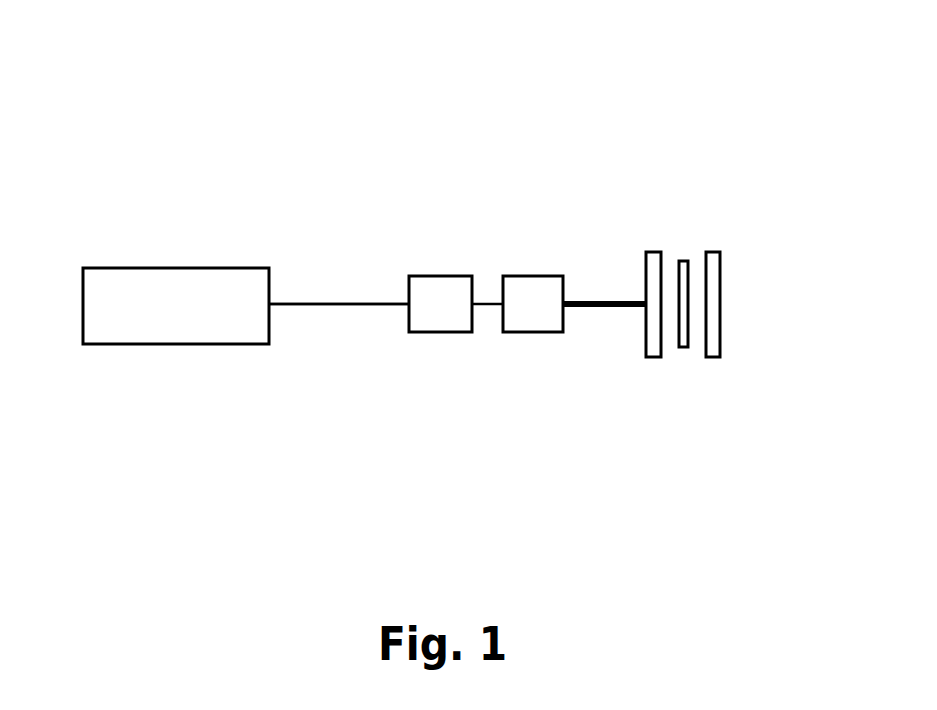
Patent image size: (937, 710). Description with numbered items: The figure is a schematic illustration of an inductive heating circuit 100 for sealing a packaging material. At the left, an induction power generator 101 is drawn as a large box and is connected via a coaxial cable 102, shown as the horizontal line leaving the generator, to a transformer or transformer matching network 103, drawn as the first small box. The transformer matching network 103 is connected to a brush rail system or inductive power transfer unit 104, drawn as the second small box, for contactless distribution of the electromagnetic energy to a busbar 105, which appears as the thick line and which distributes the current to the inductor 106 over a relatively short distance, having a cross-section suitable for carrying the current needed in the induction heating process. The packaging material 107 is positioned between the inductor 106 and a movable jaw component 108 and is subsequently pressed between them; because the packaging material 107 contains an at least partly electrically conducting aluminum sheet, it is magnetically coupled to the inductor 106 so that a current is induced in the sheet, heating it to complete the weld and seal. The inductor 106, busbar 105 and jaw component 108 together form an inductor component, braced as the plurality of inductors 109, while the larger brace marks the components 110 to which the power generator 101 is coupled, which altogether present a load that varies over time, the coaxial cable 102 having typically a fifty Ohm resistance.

The inductive heating circuit 100 is at (142, 72).
The induction power generator 101 is at (184, 268).
The coaxial cable 102 is at (377, 305).
The transformer matching network 103 is at (438, 276).
The second optical element 104 is at (552, 276).
The busbar 105 is at (628, 308).
The inductor 106 is at (657, 252).
The packaging material 107 is at (683, 261).
The movable jaw component 108 is at (720, 278).
The plurality of inductors 109 is at (696, 301).
The components 110 is at (720, 500).